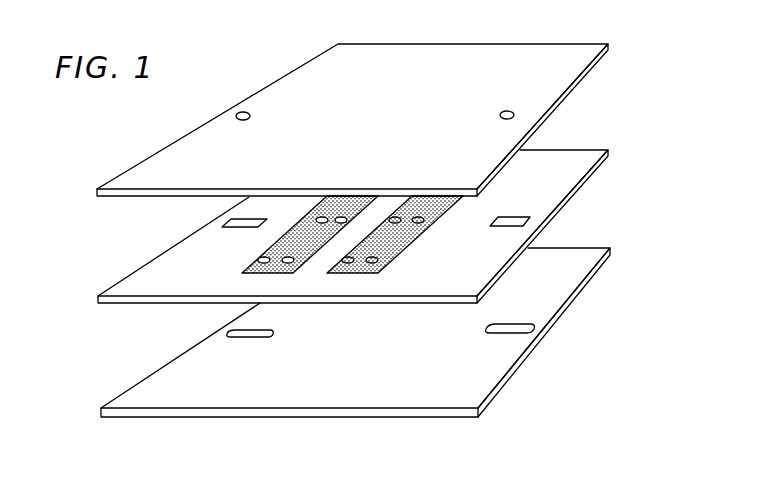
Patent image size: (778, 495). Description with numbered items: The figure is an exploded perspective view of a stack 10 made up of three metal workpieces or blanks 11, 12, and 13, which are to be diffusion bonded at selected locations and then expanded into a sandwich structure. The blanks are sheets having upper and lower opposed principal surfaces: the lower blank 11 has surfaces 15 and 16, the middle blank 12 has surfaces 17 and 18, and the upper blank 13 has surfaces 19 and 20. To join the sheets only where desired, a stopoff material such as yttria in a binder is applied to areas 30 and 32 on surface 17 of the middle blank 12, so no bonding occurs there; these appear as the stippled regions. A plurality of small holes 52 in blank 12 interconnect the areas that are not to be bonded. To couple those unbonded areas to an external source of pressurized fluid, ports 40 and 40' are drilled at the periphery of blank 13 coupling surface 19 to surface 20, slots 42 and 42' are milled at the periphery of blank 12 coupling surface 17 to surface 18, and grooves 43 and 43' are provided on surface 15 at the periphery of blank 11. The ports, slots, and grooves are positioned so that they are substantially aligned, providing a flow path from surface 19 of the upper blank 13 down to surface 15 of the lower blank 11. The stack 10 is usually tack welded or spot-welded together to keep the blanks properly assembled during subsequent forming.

The stack 10 is at (637, 30).
The metal blank 11 is at (342, 358).
The metal blank 12 is at (334, 244).
The metal blank 13 is at (343, 122).
The upper principal surface 15 is at (202, 363).
The lower principal surface 16 is at (192, 418).
The upper principal surface 17 is at (152, 270).
The lower principal surface 18 is at (140, 305).
The upper principal surface 19 is at (333, 77).
The lower principal surface 20 is at (125, 197).
The stopoff-coated area 30 is at (332, 234).
The stopoff-coated area 32 is at (390, 262).
The port 40 is at (522, 91).
The port 40' is at (238, 89).
The slot 42 is at (522, 200).
The slot 42' is at (212, 216).
The groove 43 is at (514, 310).
The groove 43' is at (271, 321).
The small holes 52 is at (268, 258).